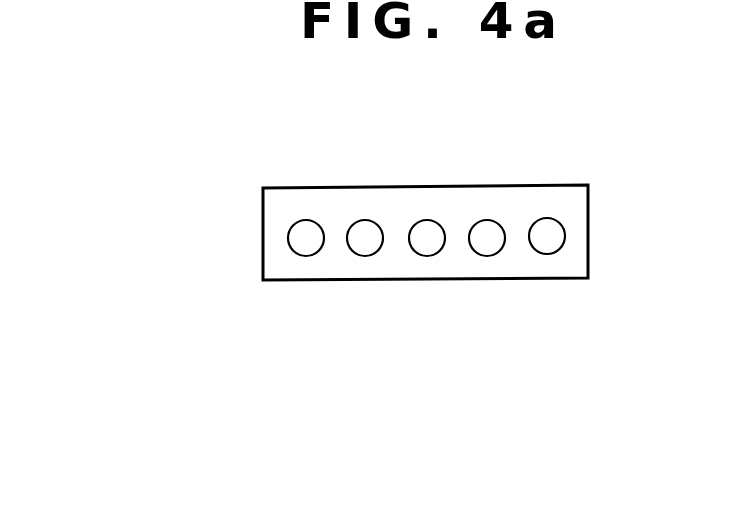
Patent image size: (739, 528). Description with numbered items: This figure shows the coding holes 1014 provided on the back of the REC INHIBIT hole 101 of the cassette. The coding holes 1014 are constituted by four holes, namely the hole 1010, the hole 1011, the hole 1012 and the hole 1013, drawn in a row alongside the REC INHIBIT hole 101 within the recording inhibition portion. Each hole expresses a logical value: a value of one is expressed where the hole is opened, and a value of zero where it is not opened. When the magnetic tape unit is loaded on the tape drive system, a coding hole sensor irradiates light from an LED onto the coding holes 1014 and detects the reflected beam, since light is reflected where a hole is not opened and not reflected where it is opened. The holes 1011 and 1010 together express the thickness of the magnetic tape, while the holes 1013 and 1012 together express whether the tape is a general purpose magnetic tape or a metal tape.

The REC INHIBIT hole 101 is at (428, 219).
The hole 1010 is at (549, 254).
The hole 1011 is at (484, 256).
The hole 1012 is at (363, 256).
The hole 1013 is at (303, 255).
The coding holes 1014 is at (125, 253).